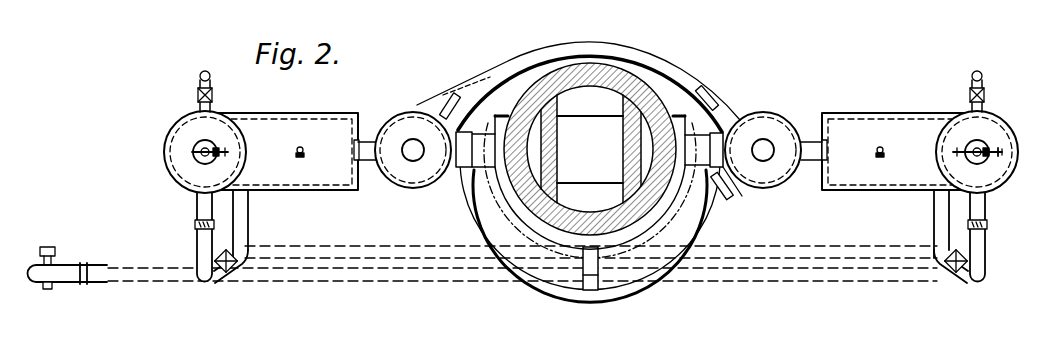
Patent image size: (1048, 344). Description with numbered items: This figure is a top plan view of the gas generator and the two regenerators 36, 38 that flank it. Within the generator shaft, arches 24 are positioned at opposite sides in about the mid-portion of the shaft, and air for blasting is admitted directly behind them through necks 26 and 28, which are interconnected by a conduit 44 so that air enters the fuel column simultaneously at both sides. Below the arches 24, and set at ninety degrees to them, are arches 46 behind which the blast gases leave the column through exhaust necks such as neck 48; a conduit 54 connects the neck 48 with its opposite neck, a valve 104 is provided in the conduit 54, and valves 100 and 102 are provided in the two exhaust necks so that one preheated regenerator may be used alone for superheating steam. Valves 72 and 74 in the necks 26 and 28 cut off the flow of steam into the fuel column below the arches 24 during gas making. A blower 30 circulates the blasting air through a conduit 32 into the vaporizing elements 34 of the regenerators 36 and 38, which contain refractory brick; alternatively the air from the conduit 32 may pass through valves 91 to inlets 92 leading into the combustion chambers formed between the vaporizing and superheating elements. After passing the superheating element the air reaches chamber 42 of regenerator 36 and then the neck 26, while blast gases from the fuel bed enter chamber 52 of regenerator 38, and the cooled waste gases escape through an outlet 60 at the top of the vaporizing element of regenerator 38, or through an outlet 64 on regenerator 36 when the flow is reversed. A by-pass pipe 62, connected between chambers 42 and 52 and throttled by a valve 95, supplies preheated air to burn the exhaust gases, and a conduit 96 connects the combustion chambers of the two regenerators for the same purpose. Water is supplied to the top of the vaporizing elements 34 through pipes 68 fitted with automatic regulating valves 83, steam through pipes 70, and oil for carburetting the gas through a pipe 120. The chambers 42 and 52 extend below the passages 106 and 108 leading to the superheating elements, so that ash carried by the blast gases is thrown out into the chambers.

The arches 24 is at (622, 147).
The neck 26 is at (495, 157).
The neck 28 is at (692, 143).
The blower 30 is at (62, 281).
The conduit 32 is at (385, 283).
The vaporizing element 34 is at (180, 178).
The regenerator 36 is at (328, 187).
The regenerator 38 is at (872, 187).
The chamber 42 is at (418, 186).
The conduit 44 is at (535, 262).
The arches 46 is at (604, 110).
The neck 48 is at (510, 112).
The chamber 52 is at (776, 183).
The conduit 54 is at (636, 278).
The outlet 60 is at (981, 78).
The by-pass pipe 62 is at (503, 73).
The outlet 64 is at (199, 78).
The pipes 68 is at (209, 148).
The pipes 70 is at (226, 149).
The valve 72 is at (461, 170).
The valve 74 is at (735, 114).
The automatic regulating valve 83 is at (993, 149).
The valves 91 is at (230, 272).
The inlets 92 is at (249, 223).
The valve 95 is at (708, 95).
The conduit 96 is at (750, 250).
The valve 100 is at (448, 98).
The valve 102 is at (724, 199).
The valve 104 is at (591, 291).
The passage 106 is at (374, 120).
The passage 108 is at (813, 118).
The pipe 120 is at (318, 139).